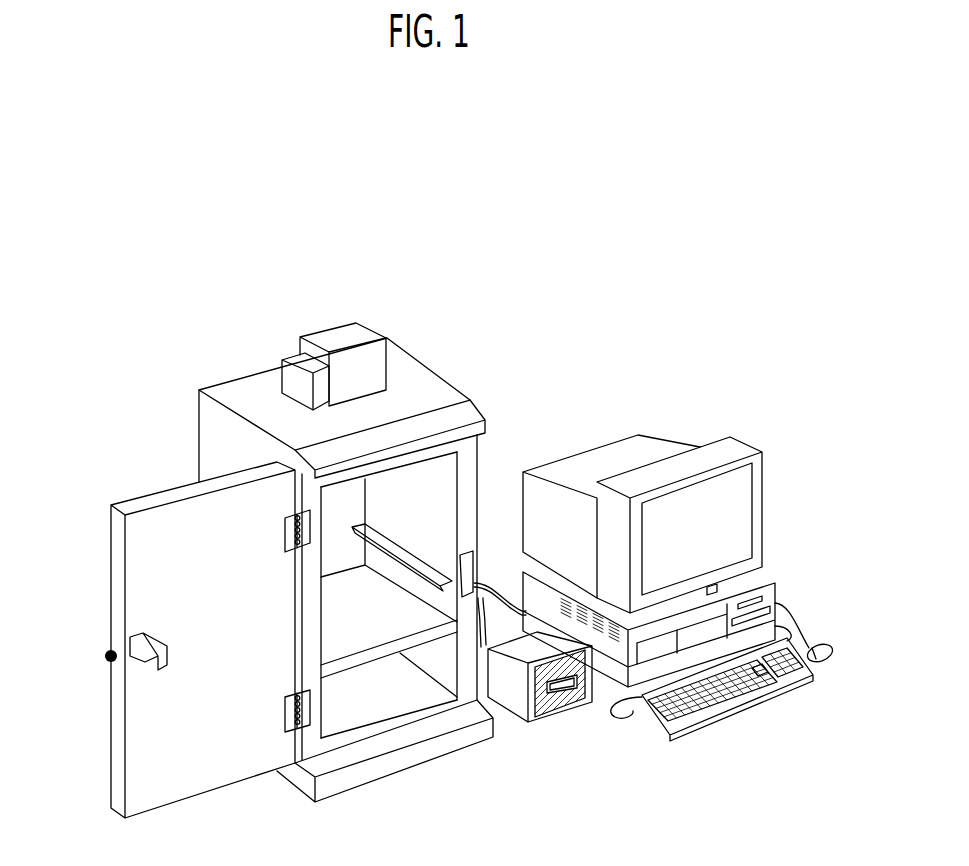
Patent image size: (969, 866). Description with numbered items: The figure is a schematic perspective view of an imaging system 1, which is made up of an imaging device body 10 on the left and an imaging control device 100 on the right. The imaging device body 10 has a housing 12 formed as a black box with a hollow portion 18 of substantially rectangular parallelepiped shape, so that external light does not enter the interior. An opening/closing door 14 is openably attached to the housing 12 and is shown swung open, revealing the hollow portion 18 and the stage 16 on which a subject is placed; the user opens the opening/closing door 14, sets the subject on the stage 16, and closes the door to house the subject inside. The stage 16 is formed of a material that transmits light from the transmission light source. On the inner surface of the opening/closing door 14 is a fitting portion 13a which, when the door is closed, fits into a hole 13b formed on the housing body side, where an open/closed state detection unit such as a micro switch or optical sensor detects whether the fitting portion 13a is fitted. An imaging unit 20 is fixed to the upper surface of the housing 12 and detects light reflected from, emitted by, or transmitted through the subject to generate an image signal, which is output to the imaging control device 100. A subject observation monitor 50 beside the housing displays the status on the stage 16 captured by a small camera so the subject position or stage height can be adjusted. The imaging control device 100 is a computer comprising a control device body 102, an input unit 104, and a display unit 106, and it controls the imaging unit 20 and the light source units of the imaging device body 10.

The imaging system 1 is at (581, 265).
The imaging device body 10 is at (320, 313).
The housing 12 is at (236, 388).
The fitting portion 13a is at (136, 635).
The hole 13b is at (474, 573).
The opening/closing door 14 is at (231, 779).
The stage 16 is at (404, 643).
The hollow portion 18 is at (438, 470).
The imaging unit 20 is at (401, 350).
The subject observation monitor 50 is at (559, 710).
The imaging control device 100 is at (687, 421).
The control device body 102 is at (760, 581).
The input unit 104 is at (748, 703).
The display unit 106 is at (758, 488).